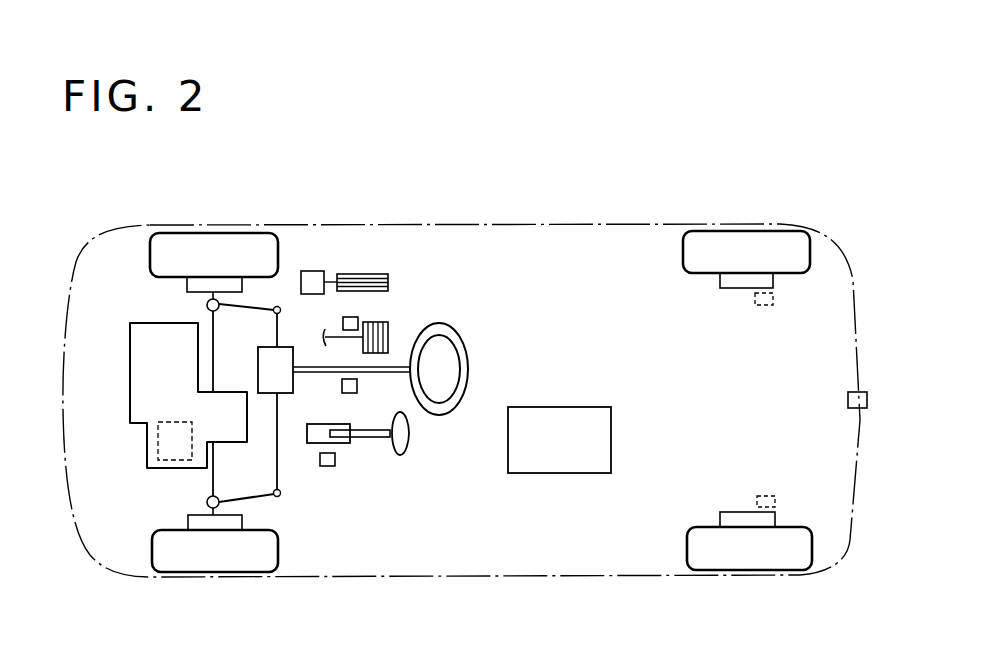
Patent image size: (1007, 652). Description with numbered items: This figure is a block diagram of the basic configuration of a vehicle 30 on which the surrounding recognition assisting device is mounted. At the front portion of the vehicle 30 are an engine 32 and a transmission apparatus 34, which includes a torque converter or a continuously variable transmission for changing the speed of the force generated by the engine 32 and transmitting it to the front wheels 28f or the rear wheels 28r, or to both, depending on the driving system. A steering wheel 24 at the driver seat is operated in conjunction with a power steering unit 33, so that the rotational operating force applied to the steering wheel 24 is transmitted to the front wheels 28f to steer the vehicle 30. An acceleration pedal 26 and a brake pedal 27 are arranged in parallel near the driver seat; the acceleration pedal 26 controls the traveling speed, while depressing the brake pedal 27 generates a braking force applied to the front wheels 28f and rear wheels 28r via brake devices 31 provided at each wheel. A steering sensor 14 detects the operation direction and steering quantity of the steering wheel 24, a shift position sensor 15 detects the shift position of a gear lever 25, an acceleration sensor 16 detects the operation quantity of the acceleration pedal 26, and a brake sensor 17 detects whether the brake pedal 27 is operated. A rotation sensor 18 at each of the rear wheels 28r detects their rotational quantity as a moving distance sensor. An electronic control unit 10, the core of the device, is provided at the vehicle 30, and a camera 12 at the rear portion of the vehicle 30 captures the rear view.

The electronic control unit 10 is at (558, 407).
The camera 12 is at (848, 400).
The steering sensor 14 is at (350, 396).
The shift position sensor 15 is at (337, 458).
The acceleration sensor 16 is at (308, 271).
The brake sensor 17 is at (342, 321).
The rotation sensor 18 is at (765, 305).
The steering wheel 24 is at (468, 360).
The gear lever 25 is at (409, 434).
The acceleration pedal 26 is at (375, 274).
The brake pedal 27 is at (392, 333).
The front wheels 28f is at (213, 234).
The rear wheels 28r is at (745, 232).
The vehicle 30 is at (500, 224).
The brake devices 31 is at (188, 283).
The engine 32 is at (178, 469).
The power steering unit 33 is at (258, 375).
The transmission apparatus 34 is at (158, 442).